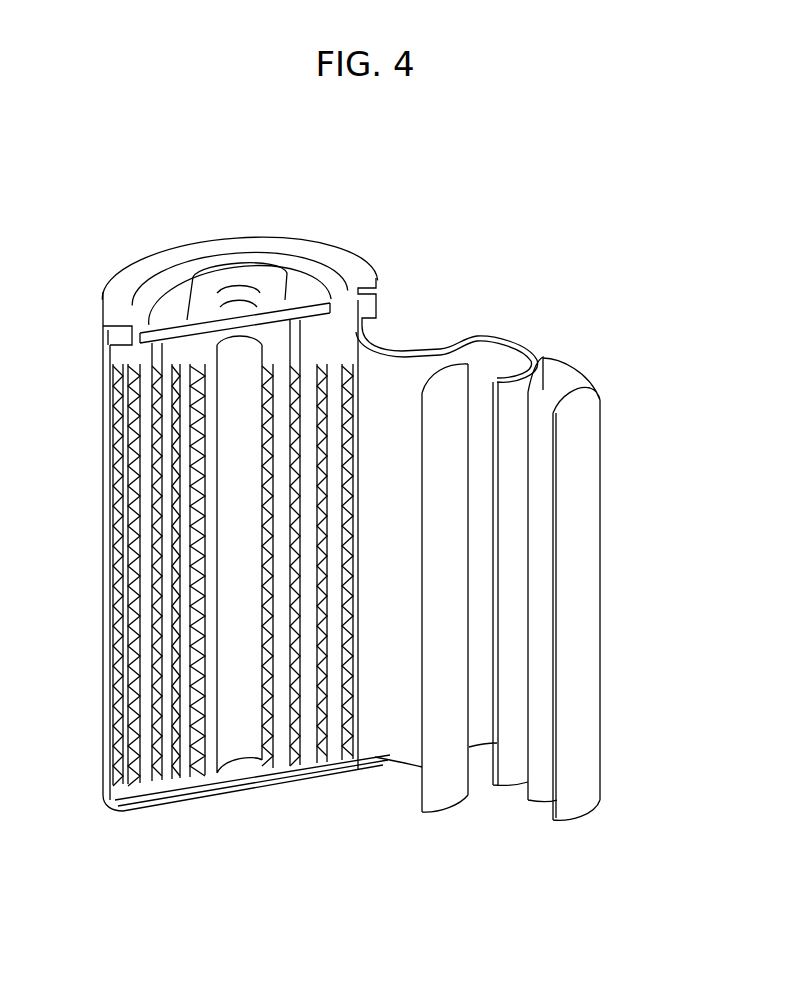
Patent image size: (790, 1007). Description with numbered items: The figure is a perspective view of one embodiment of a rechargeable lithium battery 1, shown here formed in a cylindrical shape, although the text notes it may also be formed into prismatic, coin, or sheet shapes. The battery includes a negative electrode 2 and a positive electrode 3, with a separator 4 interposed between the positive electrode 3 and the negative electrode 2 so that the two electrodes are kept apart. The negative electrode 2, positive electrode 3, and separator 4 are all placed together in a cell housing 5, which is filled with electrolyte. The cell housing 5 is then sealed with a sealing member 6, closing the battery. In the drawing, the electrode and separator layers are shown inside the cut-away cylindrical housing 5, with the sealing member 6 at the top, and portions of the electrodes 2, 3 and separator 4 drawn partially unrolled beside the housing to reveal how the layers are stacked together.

The rechargeable lithium battery 1 is at (570, 316).
The negative electrode 2 is at (590, 478).
The positive electrode 3 is at (508, 388).
The separator 4 is at (567, 391).
The cell housing 5 is at (103, 745).
The sealing member 6 is at (250, 265).